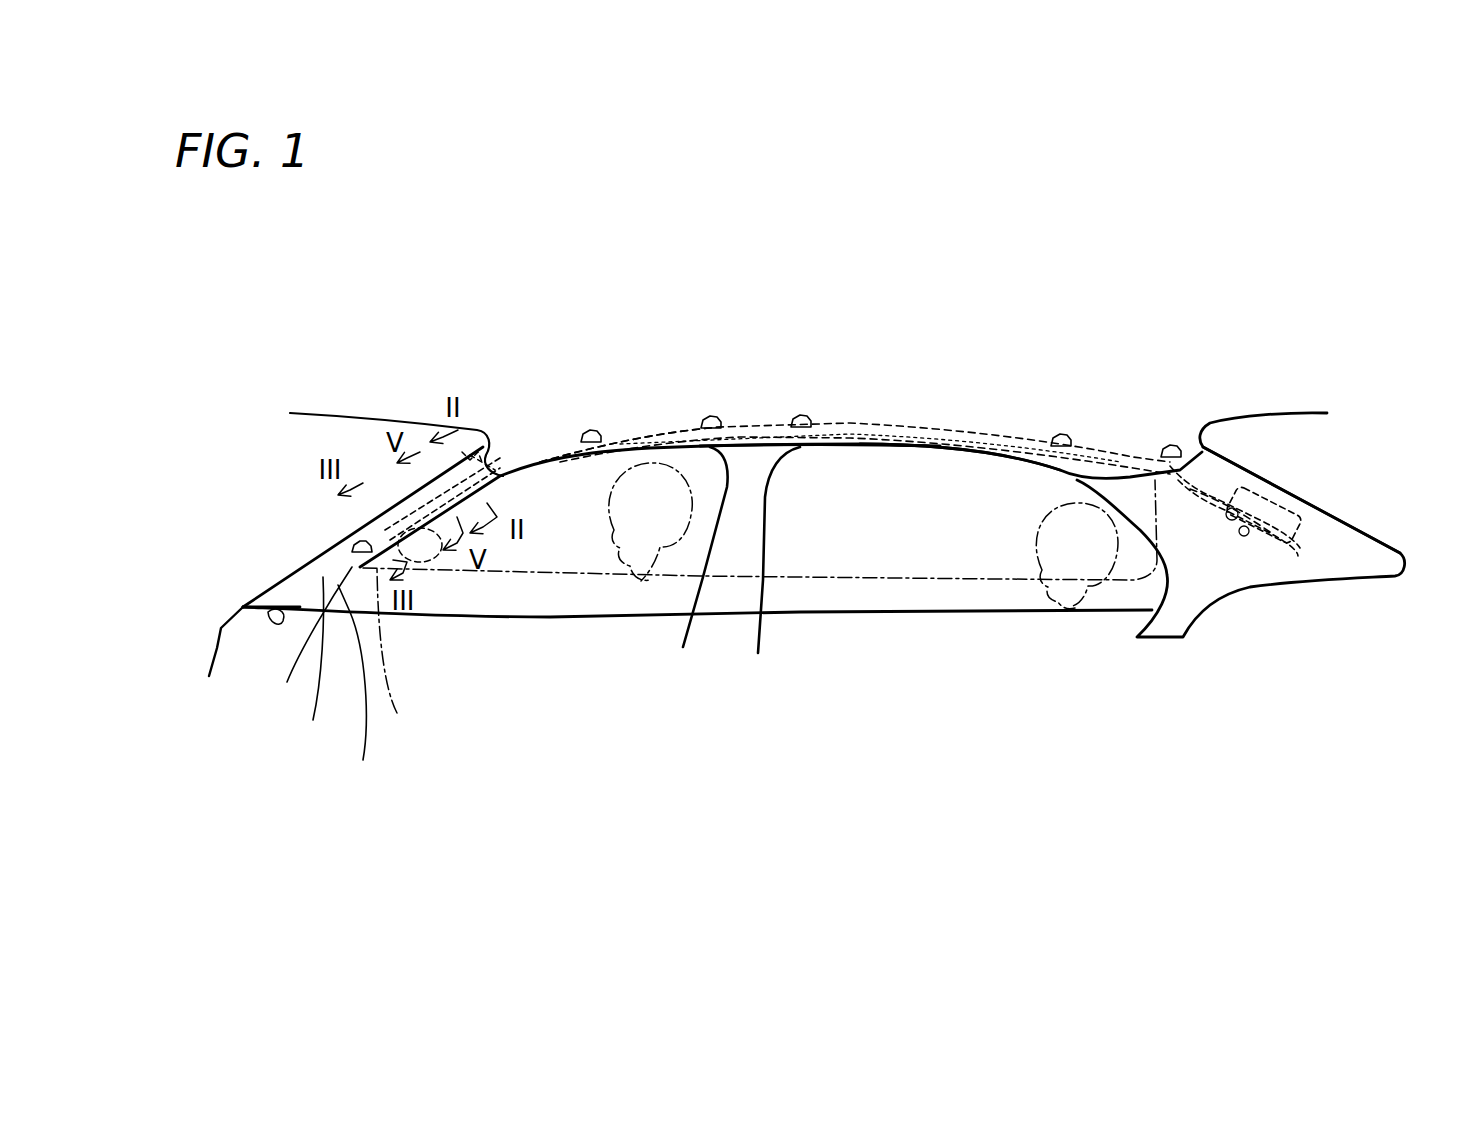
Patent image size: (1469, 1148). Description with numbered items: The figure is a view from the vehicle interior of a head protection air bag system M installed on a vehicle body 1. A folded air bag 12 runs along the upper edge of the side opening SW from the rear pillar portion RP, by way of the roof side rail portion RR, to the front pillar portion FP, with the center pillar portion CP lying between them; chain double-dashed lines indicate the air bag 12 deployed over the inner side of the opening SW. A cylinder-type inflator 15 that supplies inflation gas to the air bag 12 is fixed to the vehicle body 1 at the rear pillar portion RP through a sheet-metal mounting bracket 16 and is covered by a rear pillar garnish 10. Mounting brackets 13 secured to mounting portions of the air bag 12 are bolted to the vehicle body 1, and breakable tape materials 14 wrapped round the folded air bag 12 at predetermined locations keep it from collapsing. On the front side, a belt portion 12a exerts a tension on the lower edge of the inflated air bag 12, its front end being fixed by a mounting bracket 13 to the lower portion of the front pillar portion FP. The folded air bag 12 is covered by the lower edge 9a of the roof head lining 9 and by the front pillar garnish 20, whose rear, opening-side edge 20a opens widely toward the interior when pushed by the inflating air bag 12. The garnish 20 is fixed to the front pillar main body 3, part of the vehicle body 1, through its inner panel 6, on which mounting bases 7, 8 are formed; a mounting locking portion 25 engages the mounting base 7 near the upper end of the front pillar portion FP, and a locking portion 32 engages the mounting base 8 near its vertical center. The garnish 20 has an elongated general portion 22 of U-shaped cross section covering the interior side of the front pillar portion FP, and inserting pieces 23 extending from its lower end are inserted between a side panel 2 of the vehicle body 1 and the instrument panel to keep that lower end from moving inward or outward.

The vehicle body 1 is at (527, 407).
The side panel 2 is at (272, 657).
The front pillar main body 3 is at (357, 510).
The inner panel 6 is at (290, 567).
The mounting base 7 is at (463, 391).
The mounting locking portion 25 is at (480, 450).
The mounting base 8 is at (392, 463).
The locking portion 32 is at (385, 525).
The roof head lining 9 is at (857, 403).
The lower edge 9a is at (821, 494).
The rear pillar garnish 10 is at (1353, 567).
The air bag 12 is at (917, 420).
The belt portion 12a is at (400, 660).
The mounting bracket 13 is at (807, 420).
The breakable tape material 14 is at (540, 447).
The inflator 15 is at (1190, 388).
The mounting bracket 16 is at (1243, 530).
The garnish 20 is at (310, 666).
The edge 20a is at (362, 689).
The general portion 22 is at (252, 582).
The inserting piece 23 is at (283, 615).
The front pillar portion FP is at (248, 565).
The center pillar portion CP is at (733, 560).
The rear pillar portion RP is at (1358, 490).
The roof side rail portion RR is at (958, 417).
The opening SW is at (568, 600).
The head protection air bag system M is at (1254, 423).